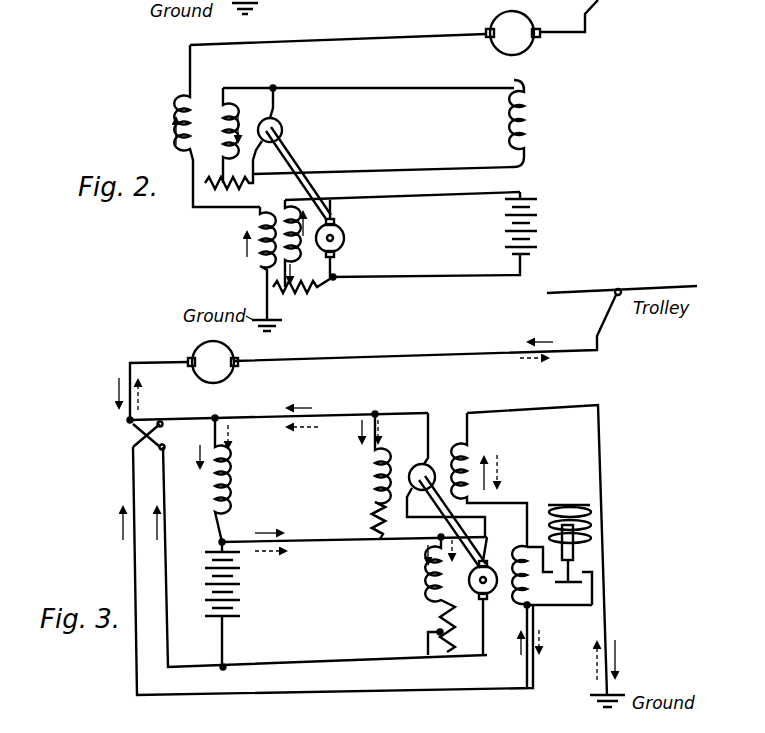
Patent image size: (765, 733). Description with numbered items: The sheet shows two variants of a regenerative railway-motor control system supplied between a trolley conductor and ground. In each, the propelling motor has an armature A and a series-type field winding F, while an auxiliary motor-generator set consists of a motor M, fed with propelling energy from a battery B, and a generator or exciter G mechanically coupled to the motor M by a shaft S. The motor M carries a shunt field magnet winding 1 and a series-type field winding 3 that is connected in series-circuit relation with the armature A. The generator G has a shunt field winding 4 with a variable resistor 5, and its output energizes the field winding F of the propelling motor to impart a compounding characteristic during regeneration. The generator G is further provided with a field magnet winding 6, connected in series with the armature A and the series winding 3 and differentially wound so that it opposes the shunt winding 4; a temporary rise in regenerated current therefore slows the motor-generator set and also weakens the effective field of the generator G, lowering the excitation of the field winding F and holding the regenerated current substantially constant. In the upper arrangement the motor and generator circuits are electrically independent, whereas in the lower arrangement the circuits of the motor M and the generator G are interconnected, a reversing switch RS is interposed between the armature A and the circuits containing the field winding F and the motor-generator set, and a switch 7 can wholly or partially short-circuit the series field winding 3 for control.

In FIG. 2, the shunt field magnet winding 1 is at (297, 247).
In FIG. 3, the shunt field magnet winding 1 is at (433, 586).
In FIG. 2, the series-type field winding 3 is at (251, 249).
In FIG. 3, the series-type field winding 3 is at (535, 593).
In FIG. 2, the shunt field winding 4 is at (221, 104).
In FIG. 3, the shunt field winding 4 is at (370, 486).
In FIG. 2, the variable resistor 5 is at (250, 188).
In FIG. 3, the variable resistor 5 is at (405, 518).
In FIG. 2, the field magnet winding 6 is at (181, 143).
In FIG. 3, the switch 7 is at (573, 573).
In FIG. 2, the armature A is at (394, 27).
In FIG. 3, the armature A is at (184, 380).
In FIG. 2, the battery B is at (538, 236).
In FIG. 3, the battery B is at (206, 596).
In FIG. 2, the series-type field winding F is at (529, 125).
In FIG. 3, the series-type field winding F is at (208, 490).
In FIG. 2, the generator G is at (368, 130).
In FIG. 3, the generator G is at (412, 465).
In FIG. 2, the motor M is at (345, 239).
In FIG. 3, the motor M is at (495, 566).
In FIG. 2, the shaft S is at (287, 156).
In FIG. 3, the shaft S is at (452, 522).
In FIG. 3, the reversing switch RS is at (142, 434).